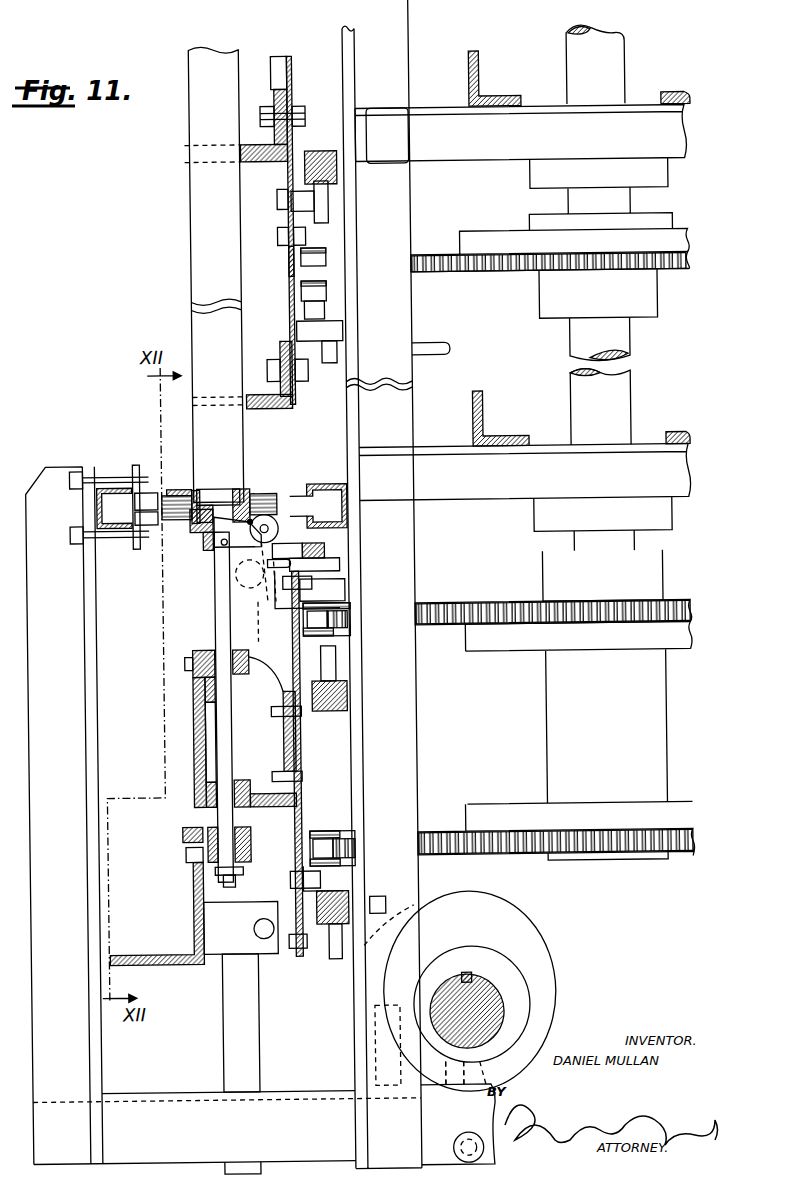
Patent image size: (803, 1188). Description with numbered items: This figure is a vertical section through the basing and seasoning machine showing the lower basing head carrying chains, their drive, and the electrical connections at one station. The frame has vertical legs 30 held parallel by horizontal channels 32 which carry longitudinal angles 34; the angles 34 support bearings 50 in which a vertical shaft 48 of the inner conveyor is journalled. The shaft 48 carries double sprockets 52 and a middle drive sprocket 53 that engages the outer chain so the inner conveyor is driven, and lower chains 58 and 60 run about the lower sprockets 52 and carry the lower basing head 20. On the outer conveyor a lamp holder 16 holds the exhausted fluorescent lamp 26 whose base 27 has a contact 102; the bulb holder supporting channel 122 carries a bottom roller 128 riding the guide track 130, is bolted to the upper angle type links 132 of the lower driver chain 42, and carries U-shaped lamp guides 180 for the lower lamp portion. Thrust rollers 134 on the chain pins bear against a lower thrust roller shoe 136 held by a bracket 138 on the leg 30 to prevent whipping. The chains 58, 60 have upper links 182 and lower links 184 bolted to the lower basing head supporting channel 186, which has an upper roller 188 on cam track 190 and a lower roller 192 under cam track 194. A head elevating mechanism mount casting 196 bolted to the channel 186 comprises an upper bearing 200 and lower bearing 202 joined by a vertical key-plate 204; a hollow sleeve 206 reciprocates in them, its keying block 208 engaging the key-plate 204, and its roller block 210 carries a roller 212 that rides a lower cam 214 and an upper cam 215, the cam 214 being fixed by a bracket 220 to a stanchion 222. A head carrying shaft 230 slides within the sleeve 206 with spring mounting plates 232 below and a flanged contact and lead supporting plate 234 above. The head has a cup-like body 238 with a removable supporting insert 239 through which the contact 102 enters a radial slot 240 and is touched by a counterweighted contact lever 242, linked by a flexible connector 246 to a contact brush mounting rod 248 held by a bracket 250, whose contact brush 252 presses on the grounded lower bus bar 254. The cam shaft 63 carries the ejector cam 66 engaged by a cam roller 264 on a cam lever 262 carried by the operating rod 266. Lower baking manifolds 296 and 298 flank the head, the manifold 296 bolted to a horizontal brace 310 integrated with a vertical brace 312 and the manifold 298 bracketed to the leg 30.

The lamp holder 16 is at (312, 135).
The lower base holder head 20 is at (186, 756).
The exhausted fluorescent lamp 26 is at (197, 296).
The base 27 is at (222, 497).
The vertical leg 30 is at (417, 709).
The horizontal channel 32 is at (455, 498).
The longitudinal angle 34 is at (670, 436).
The lower driver chain 42 is at (326, 250).
The vertical shaft 48 is at (582, 388).
The bearing 50 is at (540, 520).
The double sprocket 52 is at (554, 720).
The middle drive sprocket 53 is at (445, 262).
The lower chain 58 is at (338, 633).
The lower chain 60 is at (330, 833).
The cam shaft 63 is at (497, 1008).
The ejector cam 66 is at (507, 920).
The contact 102 is at (236, 505).
The bulb holder supporting channel 122 is at (300, 68).
The bottom roller 128 is at (326, 198).
The guide track 130 is at (342, 164).
The upper angle type link 132 is at (293, 258).
The thrust roller 134 is at (330, 293).
The lower thrust roller shoe 136 is at (329, 312).
The bracket 138 is at (346, 330).
The lamp guide 180 is at (264, 406).
The upper link 182 is at (334, 596).
The lower link 184 is at (328, 874).
The lower basing head supporting channel 186 is at (301, 813).
The upper roller 188 is at (330, 662).
The cam track 190 is at (332, 712).
The lower roller 192 is at (330, 960).
The cam track 194 is at (335, 900).
The head elevating mechanism mount casting 196 is at (283, 735).
The upper bearing 200 is at (201, 648).
The lower bearing 202 is at (244, 782).
The vertical key-plate 204 is at (192, 740).
The hollow sleeve 206 is at (214, 604).
The keying block 208 is at (204, 692).
The roller block 210 is at (246, 832).
The roller 212 is at (186, 852).
The lower cam 214 is at (192, 913).
The upper cam 215 is at (192, 830).
The bracket 220 is at (212, 949).
The stanchion 222 is at (246, 1020).
The head carrying shaft 230 is at (212, 538).
The spring mounting plate 232 is at (240, 884).
The flanged contact and lead supporting plate 234 is at (190, 527).
The cup-like body 238 is at (178, 488).
The supporting insert 239 is at (198, 495).
The radial slot 240 is at (200, 536).
The contact lever 242 is at (272, 512).
The flexible connector 246 is at (268, 586).
The contact brush mounting rod 248 is at (340, 572).
The bracket 250 is at (274, 604).
The contact brush 252 is at (288, 538).
The lower bus bar 254 is at (328, 552).
The cam lever 262 is at (448, 1088).
The cam roller 264 is at (470, 1090).
The operating rod 266 is at (348, 1052).
The lower baking manifold 296 is at (105, 482).
The lower baking manifold 298 is at (325, 485).
The horizontal brace 310 is at (176, 1095).
The vertical brace 312 is at (86, 640).